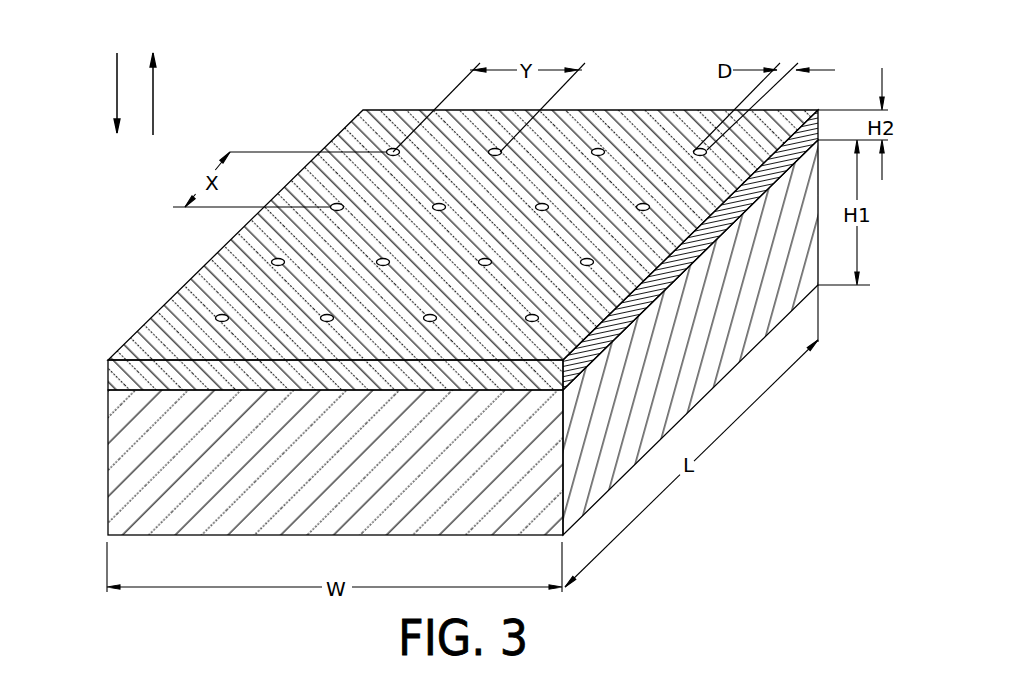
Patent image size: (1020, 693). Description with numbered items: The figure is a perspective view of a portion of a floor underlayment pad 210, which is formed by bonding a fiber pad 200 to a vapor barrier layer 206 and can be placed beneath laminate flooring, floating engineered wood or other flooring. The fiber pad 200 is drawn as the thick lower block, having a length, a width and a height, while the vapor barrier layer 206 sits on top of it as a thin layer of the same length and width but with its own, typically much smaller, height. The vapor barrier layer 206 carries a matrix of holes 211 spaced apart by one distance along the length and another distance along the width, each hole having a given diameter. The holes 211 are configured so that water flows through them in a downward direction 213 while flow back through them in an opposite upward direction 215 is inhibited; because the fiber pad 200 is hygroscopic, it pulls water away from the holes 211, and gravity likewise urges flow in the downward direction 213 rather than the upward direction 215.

The floor underlayment pad 210 is at (657, 60).
The holes 211 is at (323, 314).
The downward direction 213 is at (117, 81).
The upward direction 215 is at (153, 102).
The vapor barrier layer 206 is at (118, 376).
The fiber pad 200 is at (122, 470).